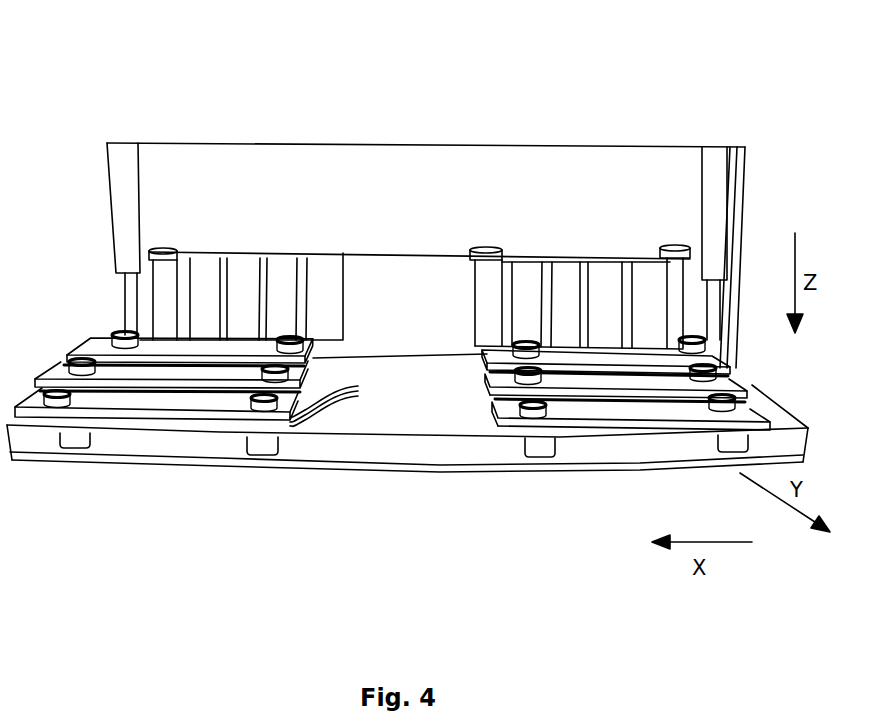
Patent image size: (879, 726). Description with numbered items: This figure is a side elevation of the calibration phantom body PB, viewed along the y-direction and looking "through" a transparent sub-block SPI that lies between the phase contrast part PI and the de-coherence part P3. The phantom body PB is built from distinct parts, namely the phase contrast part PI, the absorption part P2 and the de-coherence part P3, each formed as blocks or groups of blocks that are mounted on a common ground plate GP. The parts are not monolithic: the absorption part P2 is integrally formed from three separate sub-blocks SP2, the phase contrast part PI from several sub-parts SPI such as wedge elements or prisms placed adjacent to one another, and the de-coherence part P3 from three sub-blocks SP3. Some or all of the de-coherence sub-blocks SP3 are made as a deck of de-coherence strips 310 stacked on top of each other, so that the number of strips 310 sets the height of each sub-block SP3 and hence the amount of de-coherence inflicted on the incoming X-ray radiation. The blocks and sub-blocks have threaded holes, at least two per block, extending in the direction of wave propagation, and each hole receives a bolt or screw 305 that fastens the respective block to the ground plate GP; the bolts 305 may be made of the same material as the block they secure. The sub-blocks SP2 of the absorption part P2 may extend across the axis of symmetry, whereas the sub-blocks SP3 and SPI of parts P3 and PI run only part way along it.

The phantom body PB is at (360, 120).
The absorption part P2 is at (100, 195).
The phase contrast part PI is at (167, 300).
The sub-parts of absorption part SP2 is at (153, 153).
The sub-parts of phase contrast part SPI is at (237, 288).
The bolt 305 is at (150, 252).
The sub-parts of de-coherence part SP3 is at (193, 349).
The de-coherence strips 310 is at (346, 403).
The ground plate GP is at (358, 452).
The de-coherence part P3 is at (75, 445).